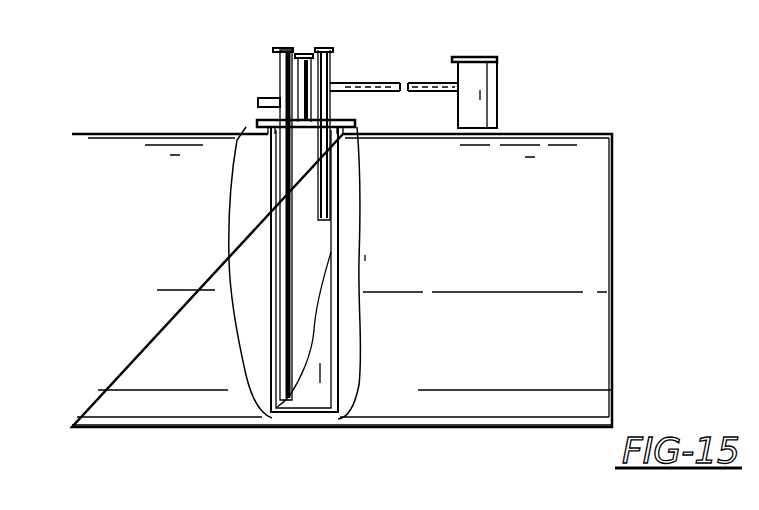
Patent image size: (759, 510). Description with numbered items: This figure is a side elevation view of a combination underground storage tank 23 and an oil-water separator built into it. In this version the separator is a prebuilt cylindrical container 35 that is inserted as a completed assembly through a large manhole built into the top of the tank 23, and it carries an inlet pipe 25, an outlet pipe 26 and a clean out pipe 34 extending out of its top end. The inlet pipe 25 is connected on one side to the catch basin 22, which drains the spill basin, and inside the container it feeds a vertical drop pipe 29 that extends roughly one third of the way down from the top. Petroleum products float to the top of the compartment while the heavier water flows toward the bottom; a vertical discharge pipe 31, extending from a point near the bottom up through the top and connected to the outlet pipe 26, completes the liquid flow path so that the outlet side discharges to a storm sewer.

The catch basin 22 is at (500, 59).
The tank 23 is at (538, 238).
The inlet pipe 25 is at (345, 82).
The outlet pipe 26 is at (266, 98).
The vertical drop pipe 29 is at (326, 202).
The vertical discharge pipe 31 is at (290, 218).
The clean out pipe 34 is at (280, 78).
The cylindrical container 35 is at (330, 361).